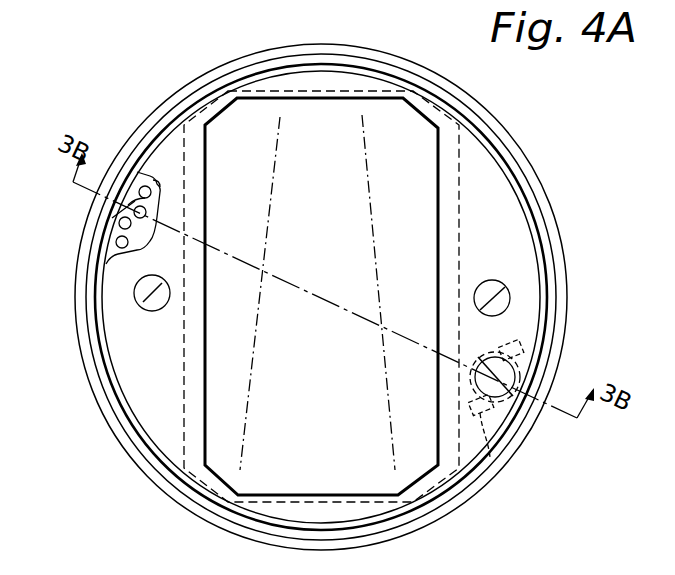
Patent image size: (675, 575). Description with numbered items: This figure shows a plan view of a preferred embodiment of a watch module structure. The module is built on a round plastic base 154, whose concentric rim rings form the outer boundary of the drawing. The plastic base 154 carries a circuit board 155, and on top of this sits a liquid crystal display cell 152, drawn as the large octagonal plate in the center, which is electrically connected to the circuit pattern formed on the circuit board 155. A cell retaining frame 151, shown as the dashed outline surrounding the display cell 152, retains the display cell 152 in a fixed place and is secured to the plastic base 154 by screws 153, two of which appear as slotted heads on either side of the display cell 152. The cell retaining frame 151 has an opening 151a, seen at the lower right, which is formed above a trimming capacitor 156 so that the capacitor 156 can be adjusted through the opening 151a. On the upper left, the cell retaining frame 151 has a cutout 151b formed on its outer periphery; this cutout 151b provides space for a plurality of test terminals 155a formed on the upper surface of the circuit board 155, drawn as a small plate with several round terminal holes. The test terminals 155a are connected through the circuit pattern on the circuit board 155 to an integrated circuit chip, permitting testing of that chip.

The cell retaining frame 151 is at (383, 98).
The opening 151a is at (500, 392).
The cutout 151b is at (157, 184).
The liquid crystal display cell 152 is at (296, 118).
The screws 153 is at (498, 280).
The plastic base 154 is at (130, 450).
The circuit board 155 is at (133, 168).
The test terminals 155a is at (112, 218).
The trimming capacitor 156 is at (490, 457).